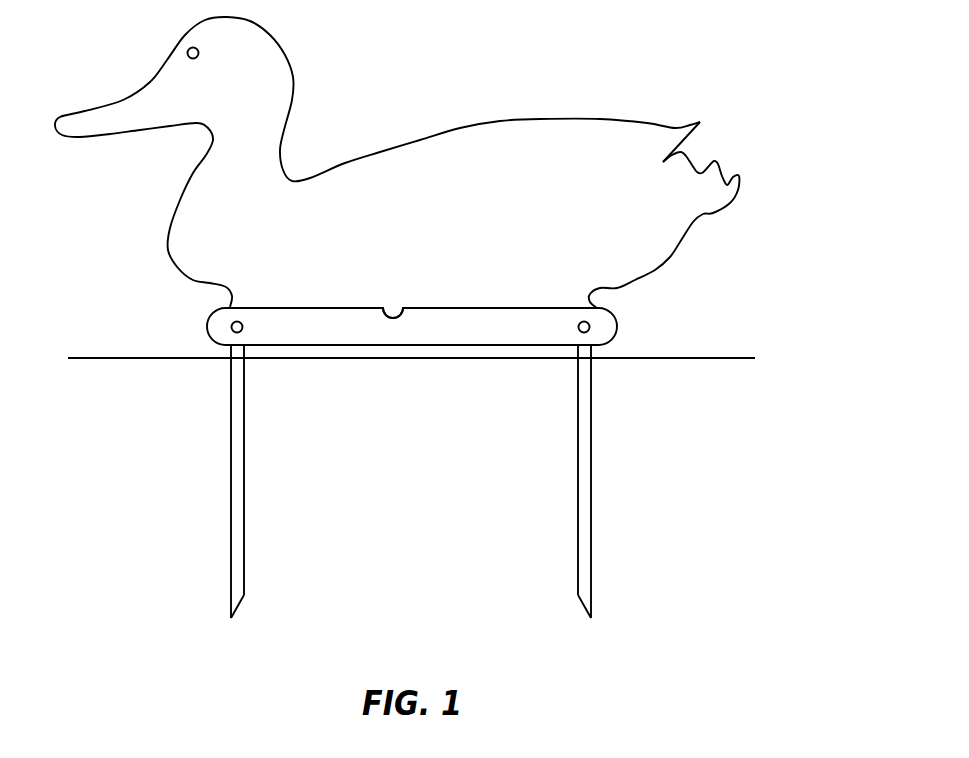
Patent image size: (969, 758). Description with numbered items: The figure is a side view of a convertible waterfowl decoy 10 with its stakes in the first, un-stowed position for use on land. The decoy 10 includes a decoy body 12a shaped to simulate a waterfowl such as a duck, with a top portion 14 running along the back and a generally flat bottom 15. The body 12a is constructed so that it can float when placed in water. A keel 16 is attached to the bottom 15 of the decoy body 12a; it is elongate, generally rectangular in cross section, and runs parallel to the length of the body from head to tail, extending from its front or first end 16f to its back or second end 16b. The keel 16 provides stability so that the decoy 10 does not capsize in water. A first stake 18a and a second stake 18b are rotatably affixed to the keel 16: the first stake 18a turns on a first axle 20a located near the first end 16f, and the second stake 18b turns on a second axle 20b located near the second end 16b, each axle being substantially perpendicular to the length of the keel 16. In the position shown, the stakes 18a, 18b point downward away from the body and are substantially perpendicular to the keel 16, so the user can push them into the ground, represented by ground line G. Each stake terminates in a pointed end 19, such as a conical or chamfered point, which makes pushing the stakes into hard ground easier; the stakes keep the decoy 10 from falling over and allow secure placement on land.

The convertible waterfowl decoy 10 is at (578, 54).
The decoy body 12a is at (397, 162).
The top portion 14 is at (527, 140).
The bottom 15 is at (402, 306).
The keel 16 is at (447, 330).
The front or first end of keel 16f is at (189, 328).
The back or second end of keel 16b is at (631, 328).
The first stake 18a is at (231, 502).
The second stake 18b is at (592, 483).
The pointed end 19 is at (240, 609).
The first axle 20a is at (237, 327).
The second axle 20b is at (588, 325).
The ground line G is at (708, 359).